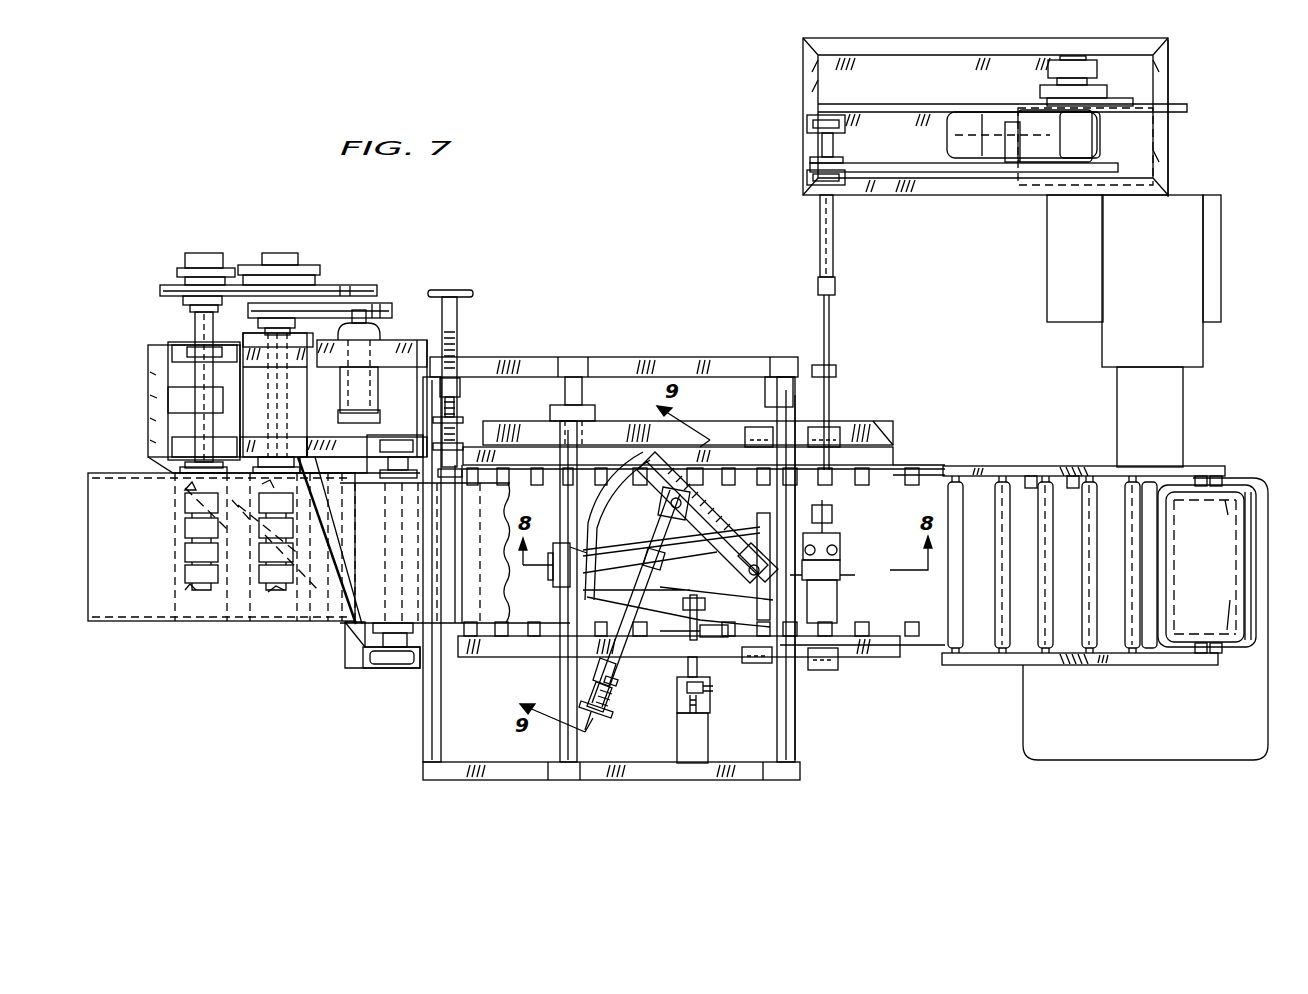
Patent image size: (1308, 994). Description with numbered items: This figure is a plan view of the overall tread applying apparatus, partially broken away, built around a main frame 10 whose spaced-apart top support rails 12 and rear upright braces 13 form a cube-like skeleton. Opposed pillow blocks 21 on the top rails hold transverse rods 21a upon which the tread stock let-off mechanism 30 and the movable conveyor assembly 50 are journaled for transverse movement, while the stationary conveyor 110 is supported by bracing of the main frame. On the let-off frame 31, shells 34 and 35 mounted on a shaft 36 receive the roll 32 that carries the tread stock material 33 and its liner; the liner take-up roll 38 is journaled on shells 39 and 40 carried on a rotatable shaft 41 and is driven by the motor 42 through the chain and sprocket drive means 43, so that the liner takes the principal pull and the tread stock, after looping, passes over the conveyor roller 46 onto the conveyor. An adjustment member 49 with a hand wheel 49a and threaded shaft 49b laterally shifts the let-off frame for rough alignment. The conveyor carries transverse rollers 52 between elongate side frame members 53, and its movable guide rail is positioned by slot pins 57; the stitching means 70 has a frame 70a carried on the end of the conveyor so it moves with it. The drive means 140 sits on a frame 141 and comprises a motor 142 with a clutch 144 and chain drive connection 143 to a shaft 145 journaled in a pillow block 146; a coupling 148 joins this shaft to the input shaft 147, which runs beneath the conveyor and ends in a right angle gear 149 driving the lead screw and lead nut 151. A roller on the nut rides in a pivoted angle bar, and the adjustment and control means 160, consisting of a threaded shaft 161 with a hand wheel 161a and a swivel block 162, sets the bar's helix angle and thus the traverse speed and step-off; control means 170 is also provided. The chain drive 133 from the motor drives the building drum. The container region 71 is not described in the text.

The main frame 10 is at (812, 726).
The top support rail 12 is at (435, 700).
The rear upright brace 13 is at (1218, 763).
The pillow block 21 is at (462, 363).
The transverse rod 21a is at (443, 742).
The tread stock let-off mechanism 30 is at (238, 250).
The tread stock let-off frame 31 is at (150, 406).
The roll 32 is at (167, 627).
The tread stock material 33 is at (497, 603).
The shell 34 is at (185, 490).
The shell 35 is at (185, 590).
The shaft 36 is at (197, 380).
The liner take-up roll 38 is at (240, 627).
The shell 39 is at (262, 484).
The shell 40 is at (273, 592).
The rotatable shaft 41 is at (282, 395).
The motor 42 is at (345, 384).
The chain and sprocket drive means 43 is at (333, 284).
The conveyor roller 46 is at (348, 628).
The adjustment member 49 is at (470, 308).
The hand wheel 49a is at (445, 290).
The threaded shaft 49b is at (460, 328).
The movable conveyor assembly 50 is at (893, 438).
The transverse roller 52 is at (563, 494).
The side frame member 53 is at (614, 425).
The slot pin 57 is at (748, 664).
The stitching means 70 is at (1250, 530).
The frame 70a is at (1193, 468).
The container 71 is at (1205, 567).
The stationary conveyor 110 is at (1000, 663).
The chain drive 133 is at (1042, 100).
The drive means 140 is at (1182, 166).
The frame 141 is at (1162, 83).
The motor 142 is at (1085, 134).
The chain drive connection 143 is at (937, 168).
The clutch 144 is at (1097, 65).
The shaft 145 is at (815, 184).
The pillow block 146 is at (808, 166).
The input shaft 147 is at (832, 316).
The coupling 148 is at (835, 264).
The right angle gear 149 is at (830, 548).
The lead nut 151 is at (748, 545).
The adjustment and control means 160 is at (622, 699).
The threaded shaft 161 is at (606, 690).
The hand wheel 161a is at (600, 715).
The swivel block 162 is at (668, 510).
The control means 170 is at (712, 707).